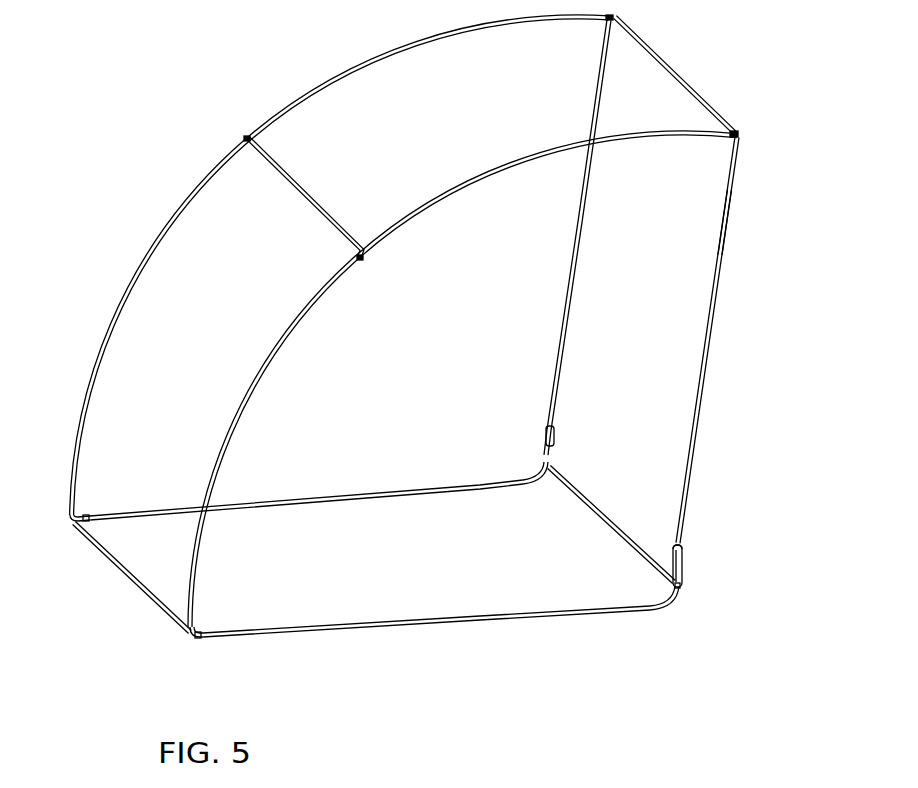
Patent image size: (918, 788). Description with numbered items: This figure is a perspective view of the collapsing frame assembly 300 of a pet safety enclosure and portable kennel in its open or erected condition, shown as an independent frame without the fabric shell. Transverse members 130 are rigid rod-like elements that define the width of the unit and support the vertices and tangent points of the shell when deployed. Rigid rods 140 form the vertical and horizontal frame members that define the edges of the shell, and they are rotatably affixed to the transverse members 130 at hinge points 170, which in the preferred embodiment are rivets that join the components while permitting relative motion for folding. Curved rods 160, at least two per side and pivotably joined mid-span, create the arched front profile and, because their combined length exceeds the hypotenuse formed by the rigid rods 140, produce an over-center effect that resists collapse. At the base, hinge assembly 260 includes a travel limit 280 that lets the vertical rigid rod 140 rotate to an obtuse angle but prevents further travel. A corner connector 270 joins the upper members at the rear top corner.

The transverse members 130 is at (287, 177).
The rigid rods 140 is at (700, 358).
The curved rods 160 is at (383, 232).
The hinge points 170 is at (362, 263).
The hinge assembly 260 is at (680, 590).
The top corner connector 270 is at (737, 147).
The travel limit 280 is at (679, 546).
The collapsing frame assembly 300 is at (725, 270).